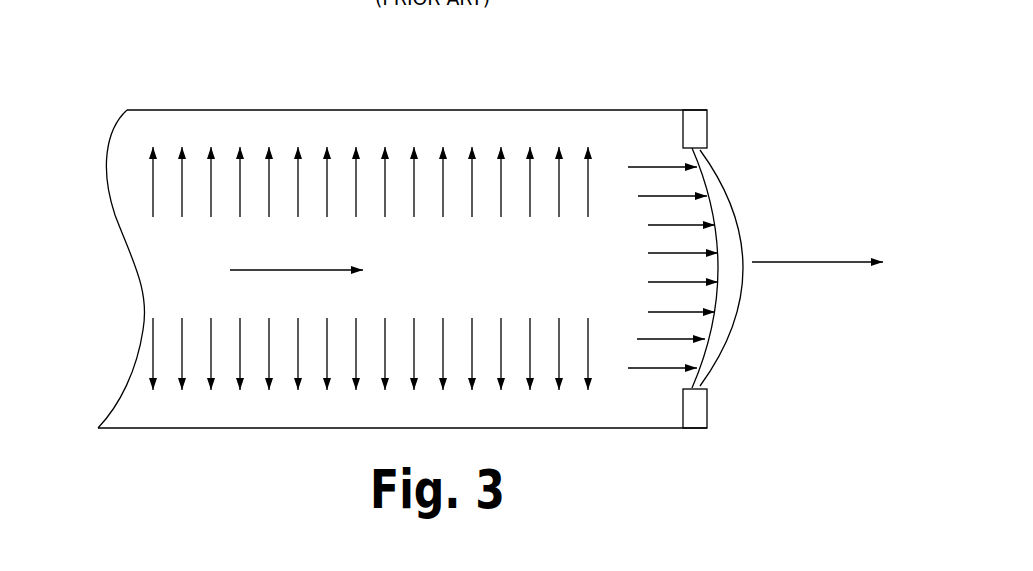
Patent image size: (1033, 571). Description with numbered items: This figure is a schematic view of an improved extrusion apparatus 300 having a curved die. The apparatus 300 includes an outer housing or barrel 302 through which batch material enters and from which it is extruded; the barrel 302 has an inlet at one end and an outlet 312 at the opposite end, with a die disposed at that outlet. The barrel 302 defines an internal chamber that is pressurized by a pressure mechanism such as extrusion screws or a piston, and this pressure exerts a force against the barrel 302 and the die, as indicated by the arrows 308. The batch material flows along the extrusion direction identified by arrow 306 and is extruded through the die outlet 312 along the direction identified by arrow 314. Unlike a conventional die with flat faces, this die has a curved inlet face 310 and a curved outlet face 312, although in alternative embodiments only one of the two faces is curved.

The extrusion apparatus 300 is at (160, 30).
The barrel 302 is at (393, 110).
The extrusion direction arrow 306 is at (278, 269).
The pressure arrows 308 is at (153, 190).
The curved inlet face 310 is at (703, 183).
The curved outlet face 312 is at (730, 364).
The extrusion output direction arrow 314 is at (834, 262).